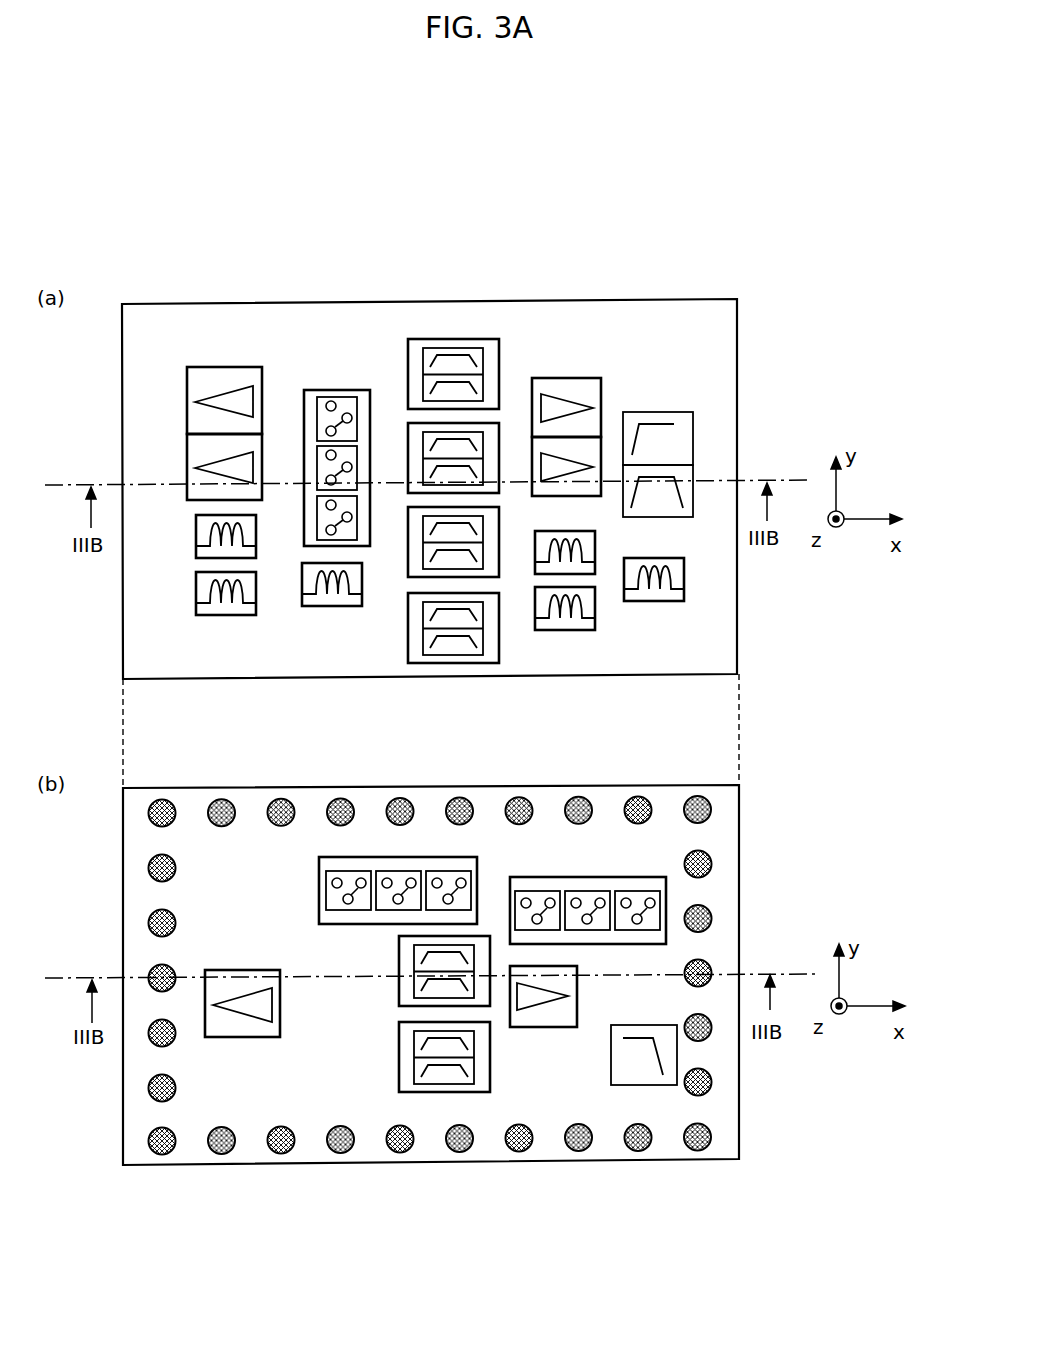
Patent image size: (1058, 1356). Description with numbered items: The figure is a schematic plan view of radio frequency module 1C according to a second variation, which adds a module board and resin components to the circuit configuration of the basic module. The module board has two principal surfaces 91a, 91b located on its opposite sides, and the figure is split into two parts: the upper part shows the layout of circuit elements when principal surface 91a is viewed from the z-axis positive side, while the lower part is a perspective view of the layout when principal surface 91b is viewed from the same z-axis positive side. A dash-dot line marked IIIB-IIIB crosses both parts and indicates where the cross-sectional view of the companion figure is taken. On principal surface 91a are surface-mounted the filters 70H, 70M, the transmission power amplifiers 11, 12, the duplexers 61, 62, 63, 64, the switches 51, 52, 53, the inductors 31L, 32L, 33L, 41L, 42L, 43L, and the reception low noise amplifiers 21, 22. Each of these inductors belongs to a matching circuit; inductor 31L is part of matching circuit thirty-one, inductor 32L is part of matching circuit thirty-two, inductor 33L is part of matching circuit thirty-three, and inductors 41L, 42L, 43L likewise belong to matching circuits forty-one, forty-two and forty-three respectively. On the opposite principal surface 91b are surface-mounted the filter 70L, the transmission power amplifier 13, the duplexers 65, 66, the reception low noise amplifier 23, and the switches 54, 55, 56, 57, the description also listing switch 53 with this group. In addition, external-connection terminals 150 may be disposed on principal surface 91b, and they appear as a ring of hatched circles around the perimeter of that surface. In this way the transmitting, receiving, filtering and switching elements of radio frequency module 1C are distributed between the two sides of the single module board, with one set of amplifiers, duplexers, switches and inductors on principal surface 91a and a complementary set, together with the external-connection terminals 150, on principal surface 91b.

The radio frequency module 1C is at (822, 328).
The transmission power amplifier 11 is at (207, 367).
The transmission power amplifier 12 is at (187, 456).
The transmission power amplifier 13 is at (224, 970).
The reception low noise amplifier 21 is at (601, 387).
The reception low noise amplifier 22 is at (572, 498).
The reception low noise amplifier 23 is at (552, 1027).
The inductor 31L is at (196, 590).
The inductor 32L is at (323, 607).
The inductor 33L is at (196, 533).
The inductor 41L is at (594, 542).
The inductor 42L is at (594, 613).
The inductor 43L is at (684, 590).
The switch 51 is at (323, 397).
The switch 52 is at (317, 462).
The switch 53 is at (317, 532).
The switch 54 is at (461, 870).
The switch 55 is at (404, 870).
The switch 56 is at (347, 870).
The switch 57 is at (618, 876).
The duplexer 61 is at (407, 367).
The duplexer 62 is at (407, 450).
The duplexer 63 is at (407, 535).
The duplexer 64 is at (407, 622).
The duplexer 65 is at (398, 956).
The duplexer 66 is at (398, 1042).
The filter 70H is at (656, 412).
The filter 70M is at (650, 517).
The filter 70L is at (611, 1060).
The principal surface 91a is at (737, 316).
The principal surface 91b is at (739, 800).
The external-connection terminal 150 is at (152, 858).